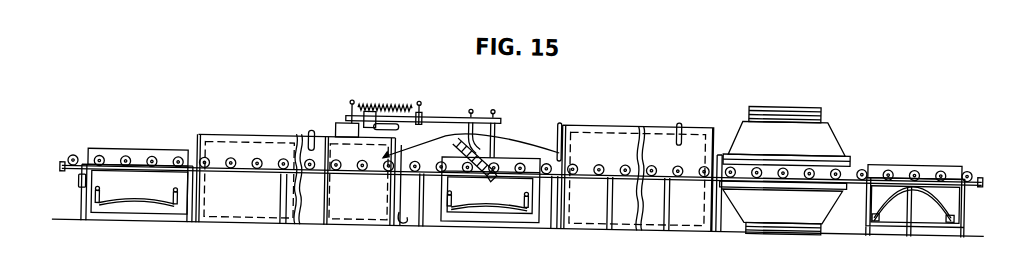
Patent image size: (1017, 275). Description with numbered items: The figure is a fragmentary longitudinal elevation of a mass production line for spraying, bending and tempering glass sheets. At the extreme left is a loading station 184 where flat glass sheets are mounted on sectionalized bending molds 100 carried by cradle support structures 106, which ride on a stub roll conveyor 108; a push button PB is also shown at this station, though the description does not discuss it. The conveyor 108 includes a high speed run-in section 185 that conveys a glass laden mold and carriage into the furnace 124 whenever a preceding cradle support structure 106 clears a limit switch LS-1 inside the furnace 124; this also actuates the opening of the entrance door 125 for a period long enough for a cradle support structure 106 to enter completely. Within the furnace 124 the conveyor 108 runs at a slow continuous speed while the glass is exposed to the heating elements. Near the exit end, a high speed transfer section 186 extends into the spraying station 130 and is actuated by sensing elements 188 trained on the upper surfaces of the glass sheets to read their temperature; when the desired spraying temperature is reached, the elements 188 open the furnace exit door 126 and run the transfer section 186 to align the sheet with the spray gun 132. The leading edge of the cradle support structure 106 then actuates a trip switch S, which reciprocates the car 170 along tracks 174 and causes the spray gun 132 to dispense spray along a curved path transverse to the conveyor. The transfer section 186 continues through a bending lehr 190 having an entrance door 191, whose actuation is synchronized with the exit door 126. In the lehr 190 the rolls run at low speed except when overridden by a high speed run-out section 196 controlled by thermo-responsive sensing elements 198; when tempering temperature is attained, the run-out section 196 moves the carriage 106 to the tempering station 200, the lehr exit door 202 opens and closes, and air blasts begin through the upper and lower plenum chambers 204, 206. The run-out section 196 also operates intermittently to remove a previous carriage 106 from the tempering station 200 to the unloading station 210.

The sectionalized bending mold 100 is at (140, 203).
The cradle support structure 106 is at (105, 213).
The stub roll conveyor 108 is at (69, 156).
The push button PB is at (78, 181).
The furnace 124 is at (281, 161).
The entrance door 125 is at (199, 150).
The furnace exit door 126 is at (399, 218).
The spraying station 130 is at (478, 155).
The spray gun 132 is at (491, 175).
The car 170 is at (421, 116).
The tracks 174 is at (373, 128).
The loading station 184 is at (112, 142).
The high speed run-in section 185 is at (278, 165).
The high speed transfer section 186 is at (490, 184).
The sensing elements 188 is at (307, 126).
The bending lehr 190 is at (721, 155).
The entrance door 191 is at (559, 132).
The high speed run-out section 196 is at (654, 160).
The thermo-responsive sensing elements 198 is at (625, 158).
The tempering station 200 is at (786, 136).
The exit door 202 is at (719, 142).
The upper plenum chamber 204 is at (787, 136).
The lower plenum chamber 206 is at (783, 208).
The unloading station 210 is at (947, 107).
The limit switch LS-1 is at (289, 158).
The trip switch S is at (621, 158).